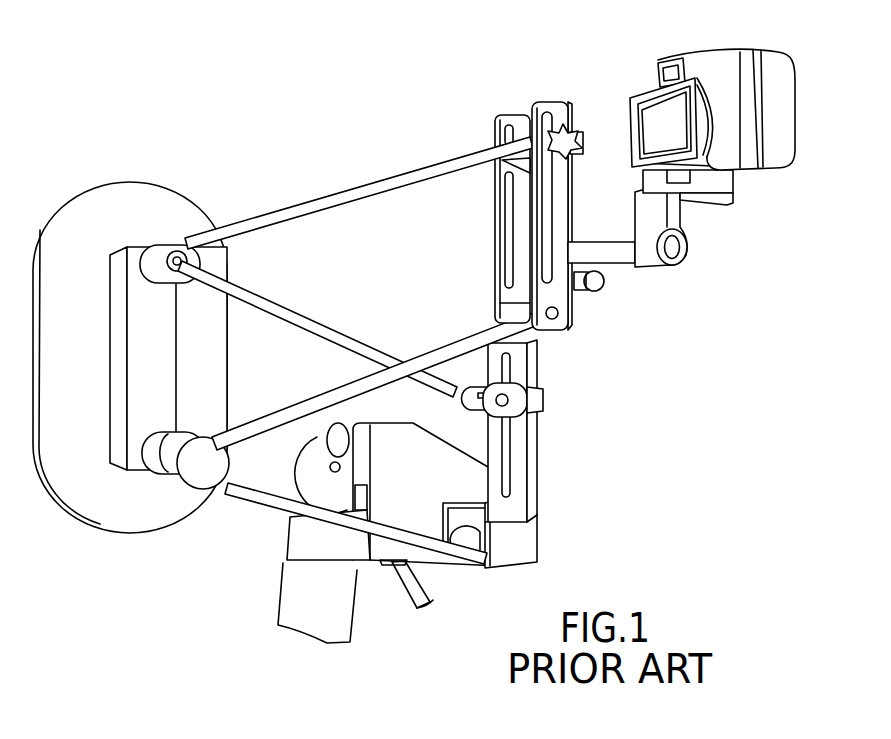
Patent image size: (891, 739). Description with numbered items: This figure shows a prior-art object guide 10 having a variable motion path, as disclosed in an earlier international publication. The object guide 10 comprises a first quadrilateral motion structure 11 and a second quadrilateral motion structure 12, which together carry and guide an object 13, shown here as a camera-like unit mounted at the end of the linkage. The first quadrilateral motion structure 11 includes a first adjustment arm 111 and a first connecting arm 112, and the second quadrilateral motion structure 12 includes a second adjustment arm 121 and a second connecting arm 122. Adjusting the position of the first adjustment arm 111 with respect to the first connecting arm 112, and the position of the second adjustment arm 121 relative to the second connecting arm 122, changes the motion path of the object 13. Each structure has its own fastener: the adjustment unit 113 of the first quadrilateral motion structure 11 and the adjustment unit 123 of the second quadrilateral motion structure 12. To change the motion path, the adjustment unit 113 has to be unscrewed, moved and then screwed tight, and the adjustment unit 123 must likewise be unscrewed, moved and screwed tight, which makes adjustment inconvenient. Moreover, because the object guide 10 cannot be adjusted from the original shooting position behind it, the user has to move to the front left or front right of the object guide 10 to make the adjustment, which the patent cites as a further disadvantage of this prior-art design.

The object guide 10 is at (386, 342).
The first quadrilateral motion structure 11 is at (384, 201).
The first adjustment arm 111 is at (330, 202).
The first connecting arm 112 is at (337, 395).
The adjustment unit 113 is at (600, 283).
The second quadrilateral motion structure 12 is at (339, 452).
The second adjustment arm 121 is at (320, 322).
The second connecting arm 122 is at (273, 495).
The adjustment unit 123 is at (543, 402).
The object 13 is at (780, 92).